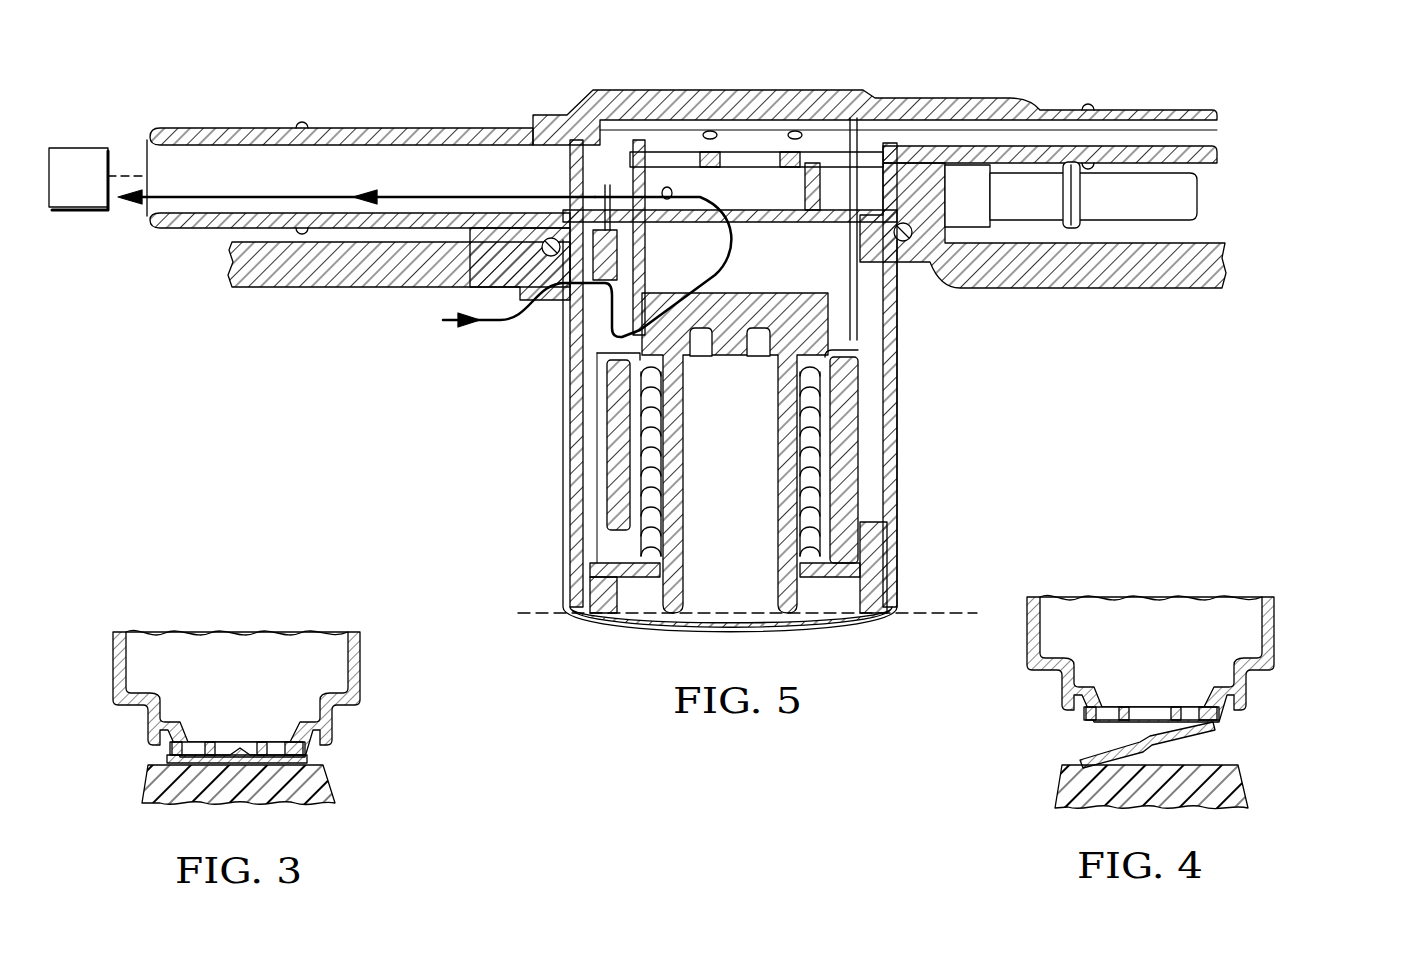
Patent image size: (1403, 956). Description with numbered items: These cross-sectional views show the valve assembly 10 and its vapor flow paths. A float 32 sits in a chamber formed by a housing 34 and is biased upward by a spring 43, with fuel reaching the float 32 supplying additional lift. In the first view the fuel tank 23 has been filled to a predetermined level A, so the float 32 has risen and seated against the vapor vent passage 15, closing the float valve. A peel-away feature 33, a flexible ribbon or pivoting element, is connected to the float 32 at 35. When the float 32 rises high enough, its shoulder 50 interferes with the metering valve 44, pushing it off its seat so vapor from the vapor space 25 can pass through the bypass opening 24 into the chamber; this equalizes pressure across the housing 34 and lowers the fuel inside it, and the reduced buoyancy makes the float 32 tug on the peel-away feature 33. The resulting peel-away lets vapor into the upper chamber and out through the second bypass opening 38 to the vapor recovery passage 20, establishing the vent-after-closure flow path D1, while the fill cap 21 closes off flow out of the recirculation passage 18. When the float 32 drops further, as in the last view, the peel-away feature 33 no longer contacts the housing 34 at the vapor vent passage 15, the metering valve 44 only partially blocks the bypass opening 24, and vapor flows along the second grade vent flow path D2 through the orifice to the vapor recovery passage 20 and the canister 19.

In FIG. 3, the valve assembly 10 is at (352, 600).
In FIG. 3, the vapor vent passage 15 is at (207, 742).
In FIG. 4, the vapor vent passage 15 is at (1123, 707).
In FIG. 5, the recirculation passage 18 is at (1015, 118).
In FIG. 5, the canister 19 is at (91, 189).
In FIG. 5, the vapor recovery passage 20 is at (403, 157).
In FIG. 5, the fill cap 21 is at (1237, 137).
In FIG. 5, the fuel tank 23 is at (353, 288).
In FIG. 5, the bypass opening 24 is at (558, 302).
In FIG. 5, the vapor space 25 is at (418, 380).
In FIG. 5, the float 32 is at (837, 343).
In FIG. 3, the float 32 is at (330, 785).
In FIG. 4, the float 32 is at (1248, 785).
In FIG. 5, the peel-away feature 33 is at (805, 292).
In FIG. 3, the peel-away feature 33 is at (178, 768).
In FIG. 4, the peel-away feature 33 is at (1177, 745).
In FIG. 5, the housing 34 is at (562, 423).
In FIG. 3, the housing 34 is at (360, 690).
In FIG. 4, the housing 34 is at (1275, 630).
In FIG. 3, the connection point of peel-away feature 35 is at (160, 762).
In FIG. 4, the connection point of peel-away feature 35 is at (1080, 765).
In FIG. 5, the second bypass opening 38 is at (664, 188).
In FIG. 5, the spring 43 is at (822, 443).
In FIG. 5, the metering valve 44 is at (593, 250).
In FIG. 5, the shoulder 50 is at (590, 337).
In FIG. 4, the vent-after-closure flow path D1 is at (1146, 680).
In FIG. 5, the second grade vent flow path D2 is at (727, 245).
In FIG. 5, the predetermined level A is at (937, 613).